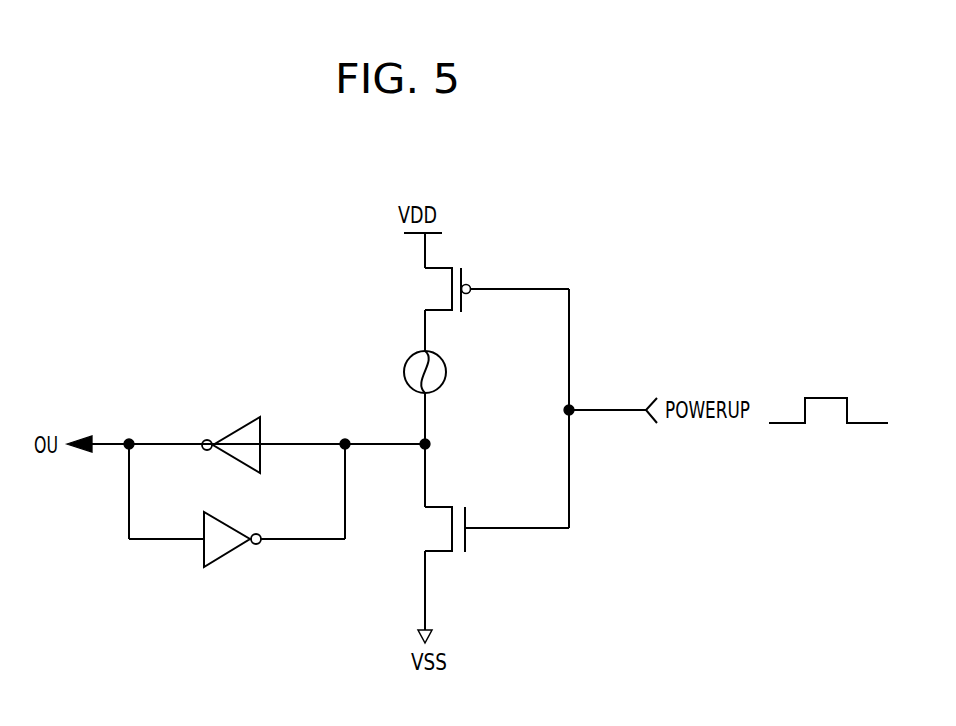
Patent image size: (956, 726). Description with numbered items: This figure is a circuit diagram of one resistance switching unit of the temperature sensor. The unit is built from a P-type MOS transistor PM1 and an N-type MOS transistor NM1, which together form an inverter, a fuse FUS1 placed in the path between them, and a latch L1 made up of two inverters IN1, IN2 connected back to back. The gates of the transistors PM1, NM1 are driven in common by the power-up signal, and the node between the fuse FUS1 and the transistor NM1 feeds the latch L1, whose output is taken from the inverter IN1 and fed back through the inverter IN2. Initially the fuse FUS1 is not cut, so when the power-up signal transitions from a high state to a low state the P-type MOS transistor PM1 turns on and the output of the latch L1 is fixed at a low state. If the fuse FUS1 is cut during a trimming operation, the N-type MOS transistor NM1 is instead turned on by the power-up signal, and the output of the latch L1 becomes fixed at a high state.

The P-type MOS transistor PM1 is at (483, 290).
The N-type MOS transistor NM1 is at (485, 529).
The fuse FUS1 is at (446, 368).
The latch L1 is at (302, 508).
The inverter IN1 is at (235, 430).
The inverter IN2 is at (227, 555).